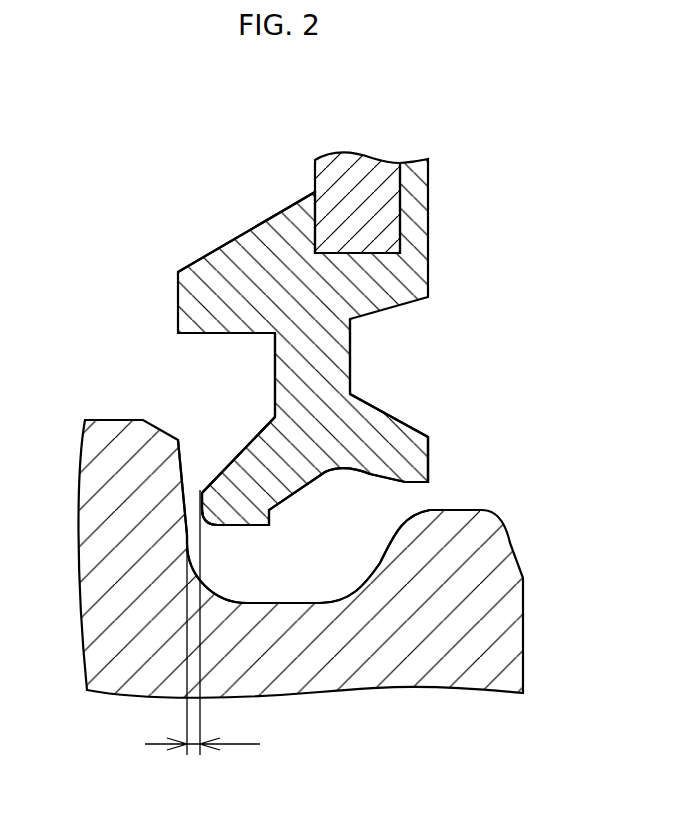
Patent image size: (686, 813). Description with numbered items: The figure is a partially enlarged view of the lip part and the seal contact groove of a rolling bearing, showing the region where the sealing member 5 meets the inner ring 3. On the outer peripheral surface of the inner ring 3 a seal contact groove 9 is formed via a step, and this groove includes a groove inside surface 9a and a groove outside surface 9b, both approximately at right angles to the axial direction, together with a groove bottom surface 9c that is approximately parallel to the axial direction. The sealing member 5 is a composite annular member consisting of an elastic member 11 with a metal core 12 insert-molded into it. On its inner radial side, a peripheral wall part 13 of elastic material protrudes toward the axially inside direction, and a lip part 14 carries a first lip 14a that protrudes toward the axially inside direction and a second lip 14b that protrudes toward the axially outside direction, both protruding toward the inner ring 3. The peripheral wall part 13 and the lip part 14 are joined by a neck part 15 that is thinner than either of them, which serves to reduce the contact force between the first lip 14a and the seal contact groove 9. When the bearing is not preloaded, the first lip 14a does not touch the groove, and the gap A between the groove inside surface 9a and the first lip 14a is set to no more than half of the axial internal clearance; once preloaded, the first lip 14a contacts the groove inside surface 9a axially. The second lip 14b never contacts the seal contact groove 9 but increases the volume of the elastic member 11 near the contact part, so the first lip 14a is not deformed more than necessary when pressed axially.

The inner ring 3 is at (120, 593).
The sealing member 5 is at (337, 301).
The seal contact groove 9 is at (276, 611).
The groove inside surface 9a is at (190, 490).
The groove outside surface 9b is at (384, 560).
The groove bottom surface 9c is at (295, 603).
The elastic member 11 is at (403, 276).
The metal core 12 is at (347, 183).
The peripheral wall part 13 is at (230, 242).
The lip part 14 is at (420, 397).
The first lip 14a is at (243, 473).
The second lip 14b is at (415, 457).
The neck part 15 is at (327, 366).
The gap A is at (202, 622).